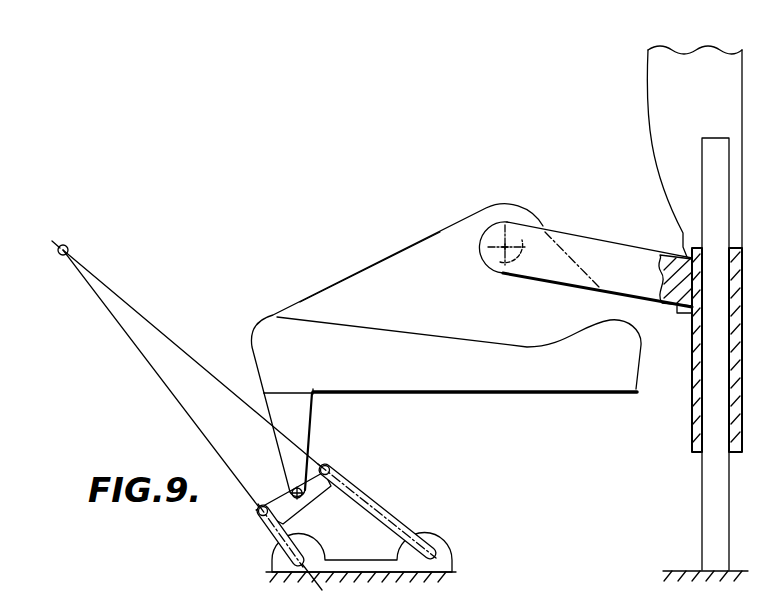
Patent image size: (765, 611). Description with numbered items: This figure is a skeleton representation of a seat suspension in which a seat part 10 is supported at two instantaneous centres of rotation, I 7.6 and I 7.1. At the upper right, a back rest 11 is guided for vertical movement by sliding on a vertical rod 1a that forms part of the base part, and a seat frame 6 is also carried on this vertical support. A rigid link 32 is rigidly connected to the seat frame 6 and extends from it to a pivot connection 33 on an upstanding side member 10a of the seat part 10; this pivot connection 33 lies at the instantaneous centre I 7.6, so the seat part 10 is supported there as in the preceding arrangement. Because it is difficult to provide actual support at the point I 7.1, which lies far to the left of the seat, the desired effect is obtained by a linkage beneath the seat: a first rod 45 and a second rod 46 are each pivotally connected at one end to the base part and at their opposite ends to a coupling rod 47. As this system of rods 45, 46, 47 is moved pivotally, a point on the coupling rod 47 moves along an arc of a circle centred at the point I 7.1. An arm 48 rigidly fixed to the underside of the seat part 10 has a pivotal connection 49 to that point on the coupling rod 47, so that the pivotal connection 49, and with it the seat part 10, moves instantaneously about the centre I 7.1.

The seat part 10 is at (326, 364).
The upstanding side member 10a is at (387, 273).
The back rest 11 is at (698, 75).
The vertical rod 1a is at (702, 545).
The seat frame 6 is at (692, 424).
The rigid link 32 is at (605, 252).
The pivot connection 33 is at (517, 233).
The first rod 45 is at (266, 540).
The second rod 46 is at (380, 508).
The coupling rod 47 is at (313, 490).
The arm 48 is at (303, 416).
The pivotal connection 49 is at (293, 488).
The instantaneous centre of rotation 7.1 is at (67, 246).
The instantaneous centre of rotation 7.6 is at (512, 242).